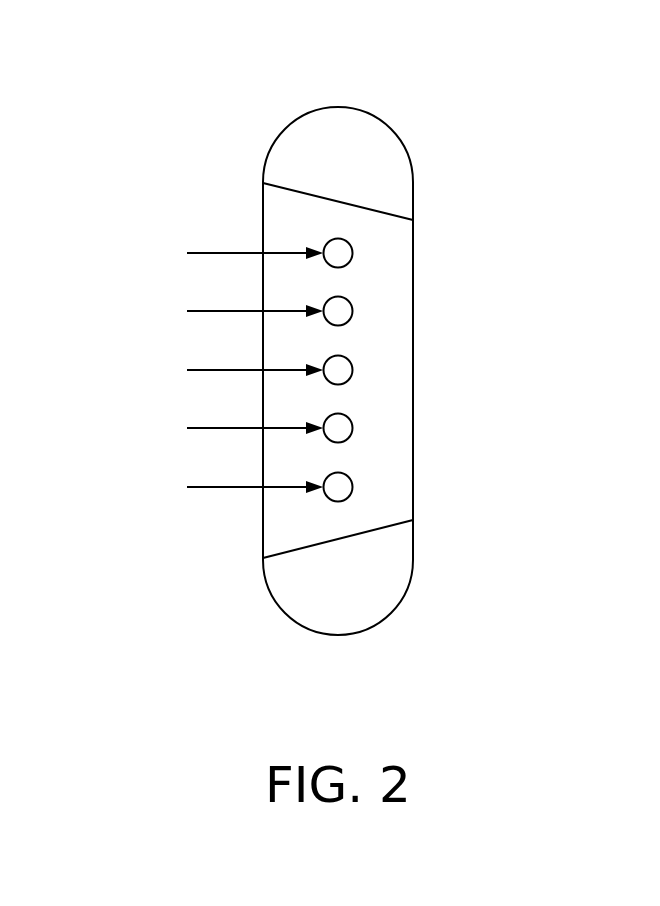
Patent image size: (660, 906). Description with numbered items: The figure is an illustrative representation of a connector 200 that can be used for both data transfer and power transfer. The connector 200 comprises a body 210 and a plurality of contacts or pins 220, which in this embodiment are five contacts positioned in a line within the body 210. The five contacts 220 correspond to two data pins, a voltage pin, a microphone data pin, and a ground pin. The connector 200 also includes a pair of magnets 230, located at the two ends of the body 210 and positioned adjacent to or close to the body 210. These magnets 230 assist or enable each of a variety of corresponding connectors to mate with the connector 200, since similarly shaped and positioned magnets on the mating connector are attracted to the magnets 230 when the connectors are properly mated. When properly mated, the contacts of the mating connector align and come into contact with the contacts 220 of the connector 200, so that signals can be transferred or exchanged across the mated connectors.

The connector 200 is at (331, 339).
The body 210 is at (306, 552).
The contacts or pins 220 is at (344, 365).
The magnets 230 is at (382, 159).